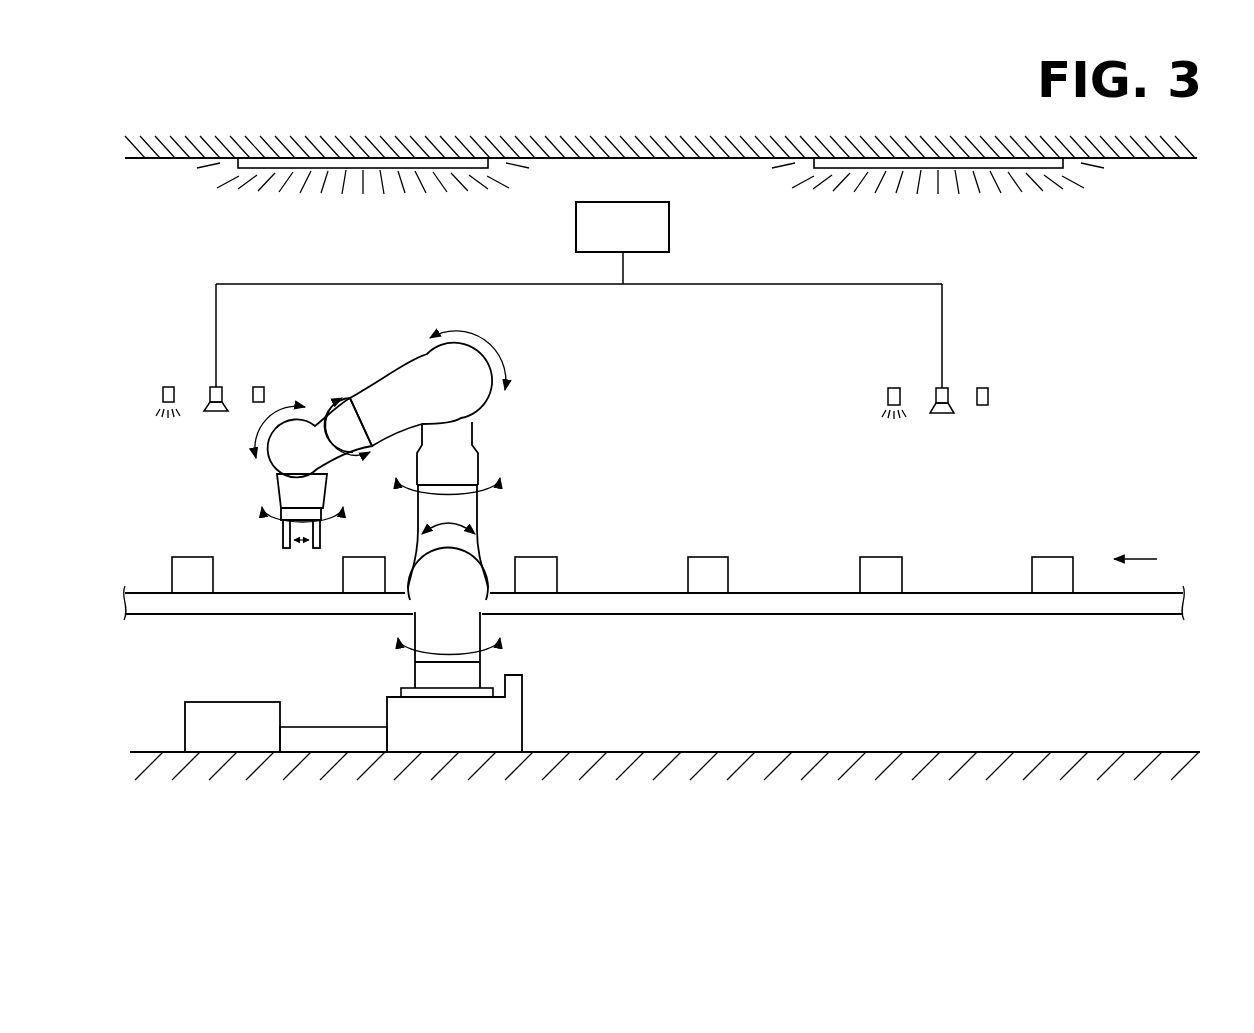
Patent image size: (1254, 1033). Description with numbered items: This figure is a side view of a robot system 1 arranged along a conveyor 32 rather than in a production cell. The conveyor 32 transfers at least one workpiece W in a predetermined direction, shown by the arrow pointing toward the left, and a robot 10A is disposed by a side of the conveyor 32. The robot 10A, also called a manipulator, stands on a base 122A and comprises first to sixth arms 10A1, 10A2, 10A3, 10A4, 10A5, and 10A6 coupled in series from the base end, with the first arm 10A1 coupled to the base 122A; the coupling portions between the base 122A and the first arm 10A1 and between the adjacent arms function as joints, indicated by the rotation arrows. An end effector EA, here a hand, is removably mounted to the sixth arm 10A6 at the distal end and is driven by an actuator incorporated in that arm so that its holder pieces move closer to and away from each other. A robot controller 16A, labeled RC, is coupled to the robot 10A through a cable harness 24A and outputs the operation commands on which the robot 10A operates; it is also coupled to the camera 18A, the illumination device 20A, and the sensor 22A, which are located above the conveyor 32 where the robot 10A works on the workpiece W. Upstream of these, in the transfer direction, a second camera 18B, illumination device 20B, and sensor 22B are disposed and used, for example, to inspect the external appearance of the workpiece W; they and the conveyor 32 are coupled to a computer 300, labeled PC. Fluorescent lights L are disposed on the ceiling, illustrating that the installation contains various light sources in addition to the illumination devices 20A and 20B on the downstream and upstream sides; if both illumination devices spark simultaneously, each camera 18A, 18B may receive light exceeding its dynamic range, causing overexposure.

The robot system 1 is at (160, 125).
The fluorescent lights L is at (431, 163).
The computer 300 is at (670, 235).
The robot 10A is at (412, 490).
The first arm 10A1 is at (465, 628).
The second arm 10A2 is at (462, 507).
The third arm 10A3 is at (458, 432).
The fourth arm 10A4 is at (388, 390).
The fifth arm 10A5 is at (320, 425).
The sixth arm 10A6 is at (313, 490).
The end effector EA is at (323, 535).
The illumination device 20A is at (165, 385).
The camera 18A is at (212, 413).
The sensor 22A is at (262, 384).
The illumination device 20B is at (885, 397).
The camera 18B is at (940, 415).
The sensor 22B is at (985, 408).
The workpiece W is at (192, 556).
The conveyor 32 is at (170, 616).
The robot controller 16A is at (241, 701).
The cable harness 24A is at (331, 726).
The base 122A is at (522, 716).